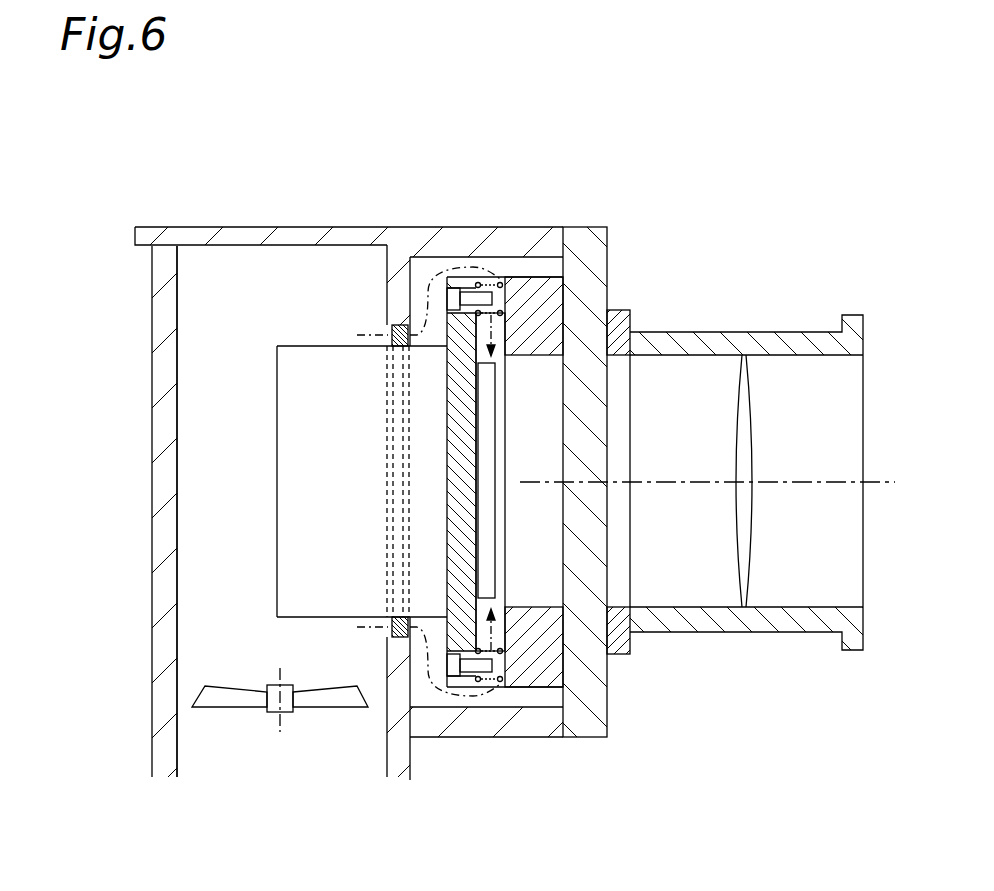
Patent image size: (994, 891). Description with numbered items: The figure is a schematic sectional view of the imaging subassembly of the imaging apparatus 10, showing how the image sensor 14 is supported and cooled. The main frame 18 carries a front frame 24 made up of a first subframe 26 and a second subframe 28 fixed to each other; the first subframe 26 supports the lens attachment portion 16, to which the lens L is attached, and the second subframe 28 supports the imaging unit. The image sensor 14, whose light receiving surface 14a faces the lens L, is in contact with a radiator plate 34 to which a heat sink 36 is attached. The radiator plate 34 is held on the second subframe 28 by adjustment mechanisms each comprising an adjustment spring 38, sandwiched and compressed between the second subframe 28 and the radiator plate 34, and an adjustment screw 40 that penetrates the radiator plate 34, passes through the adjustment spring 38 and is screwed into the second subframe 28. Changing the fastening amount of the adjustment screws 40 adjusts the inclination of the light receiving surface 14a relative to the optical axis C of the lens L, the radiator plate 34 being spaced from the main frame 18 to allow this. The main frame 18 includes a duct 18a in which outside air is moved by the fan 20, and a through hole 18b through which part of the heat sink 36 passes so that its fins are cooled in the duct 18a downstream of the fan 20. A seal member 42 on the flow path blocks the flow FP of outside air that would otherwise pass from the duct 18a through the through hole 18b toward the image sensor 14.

The imaging apparatus 10 is at (96, 250).
The image sensor 14 is at (483, 430).
The light receiving surface 14a is at (495, 520).
The lens attachment portion 16 is at (627, 318).
The main frame 18 is at (405, 240).
The duct 18a is at (250, 490).
The through hole 18b is at (388, 346).
The fan 20 is at (330, 702).
The front frame 24 is at (684, 193).
The first subframe 26 is at (600, 225).
The second subframe 28 is at (557, 293).
The radiator plate 34 is at (452, 398).
The heat sink 36 is at (352, 490).
The adjustment spring 38 is at (497, 283).
The adjustment screw 40 is at (462, 288).
The seal member 42 is at (390, 326).
The lens L is at (768, 332).
The optical axis C is at (720, 483).
The flow of outside air FP is at (410, 289).